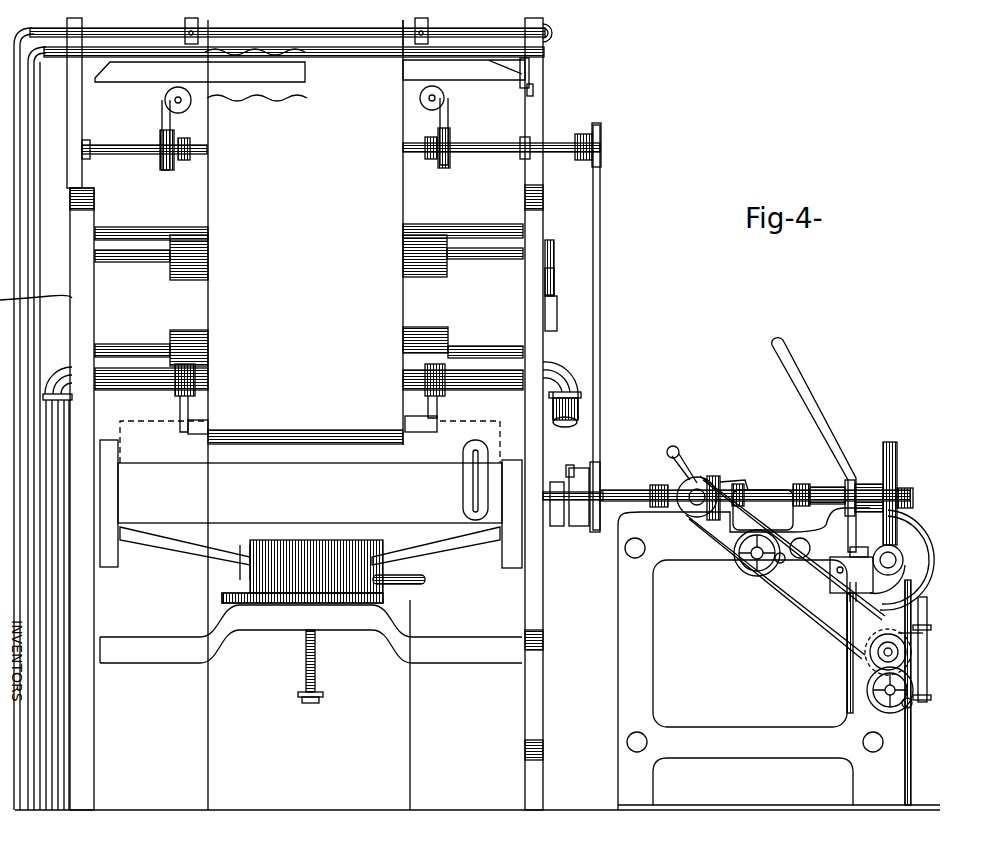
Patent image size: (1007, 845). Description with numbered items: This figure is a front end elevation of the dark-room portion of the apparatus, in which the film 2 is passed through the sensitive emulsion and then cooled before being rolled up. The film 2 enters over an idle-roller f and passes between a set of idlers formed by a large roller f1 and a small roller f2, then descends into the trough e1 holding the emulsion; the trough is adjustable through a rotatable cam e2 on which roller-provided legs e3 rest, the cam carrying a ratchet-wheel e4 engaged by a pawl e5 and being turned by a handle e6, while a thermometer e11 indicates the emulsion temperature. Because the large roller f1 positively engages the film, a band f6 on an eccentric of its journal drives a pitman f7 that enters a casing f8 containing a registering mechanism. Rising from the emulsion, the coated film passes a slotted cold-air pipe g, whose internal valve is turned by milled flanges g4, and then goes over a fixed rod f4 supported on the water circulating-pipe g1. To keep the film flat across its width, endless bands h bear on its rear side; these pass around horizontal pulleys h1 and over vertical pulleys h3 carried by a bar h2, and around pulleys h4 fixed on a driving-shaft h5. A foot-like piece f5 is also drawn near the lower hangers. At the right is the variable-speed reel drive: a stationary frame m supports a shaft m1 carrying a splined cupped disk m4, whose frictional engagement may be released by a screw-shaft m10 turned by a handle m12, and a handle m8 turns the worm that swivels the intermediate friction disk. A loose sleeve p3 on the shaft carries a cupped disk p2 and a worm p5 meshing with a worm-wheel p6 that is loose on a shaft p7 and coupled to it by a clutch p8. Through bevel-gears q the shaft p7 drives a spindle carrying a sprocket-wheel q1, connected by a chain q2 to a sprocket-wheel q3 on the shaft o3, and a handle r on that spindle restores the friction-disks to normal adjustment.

The film 2 is at (362, 690).
The circulating-pipe g1 is at (470, 30).
The fixed rod f4 is at (398, 24).
The bar h2 is at (540, 66).
The horizontal pulleys h1 is at (302, 95).
The vertical pulleys h3 is at (422, 105).
The endless bands h is at (452, 118).
The driving-shaft h5 is at (125, 148).
The pulleys h4 is at (437, 163).
The small roller f2 is at (440, 228).
The large roller f1 is at (452, 262).
The band f6 is at (556, 265).
The pitman f7 is at (565, 285).
The casing f8 is at (552, 314).
The idle-roller f is at (180, 330).
The milled flanges g4 is at (452, 350).
The cold-air pipe g is at (158, 380).
The foot f5 is at (425, 425).
The trough e1 is at (320, 505).
The thermometer e11 is at (462, 481).
The roller-provided legs e3 is at (248, 563).
The rotatable cam e2 is at (370, 560).
The pawl e5 is at (228, 607).
The handle e6 is at (430, 580).
The ratchet-wheel e4 is at (385, 598).
The stationary frame m is at (779, 659).
The shaft p7 is at (773, 492).
The handle r is at (668, 470).
The bevel-gears q is at (716, 478).
The sprocket-wheel q1 is at (728, 485).
The clutch p8 is at (862, 482).
The worm-wheel p6 is at (893, 478).
The worm p5 is at (905, 505).
The sleeve p3 is at (895, 556).
The cupped disk p2 is at (935, 583).
The shaft m1 is at (905, 572).
The screw-shaft m10 is at (757, 567).
The handle m12 is at (770, 590).
The chain q2 is at (808, 622).
The sprocket-wheel q3 is at (860, 638).
The shaft o3 is at (898, 650).
The handle m8 is at (865, 690).
The cupped disk m4 is at (928, 686).